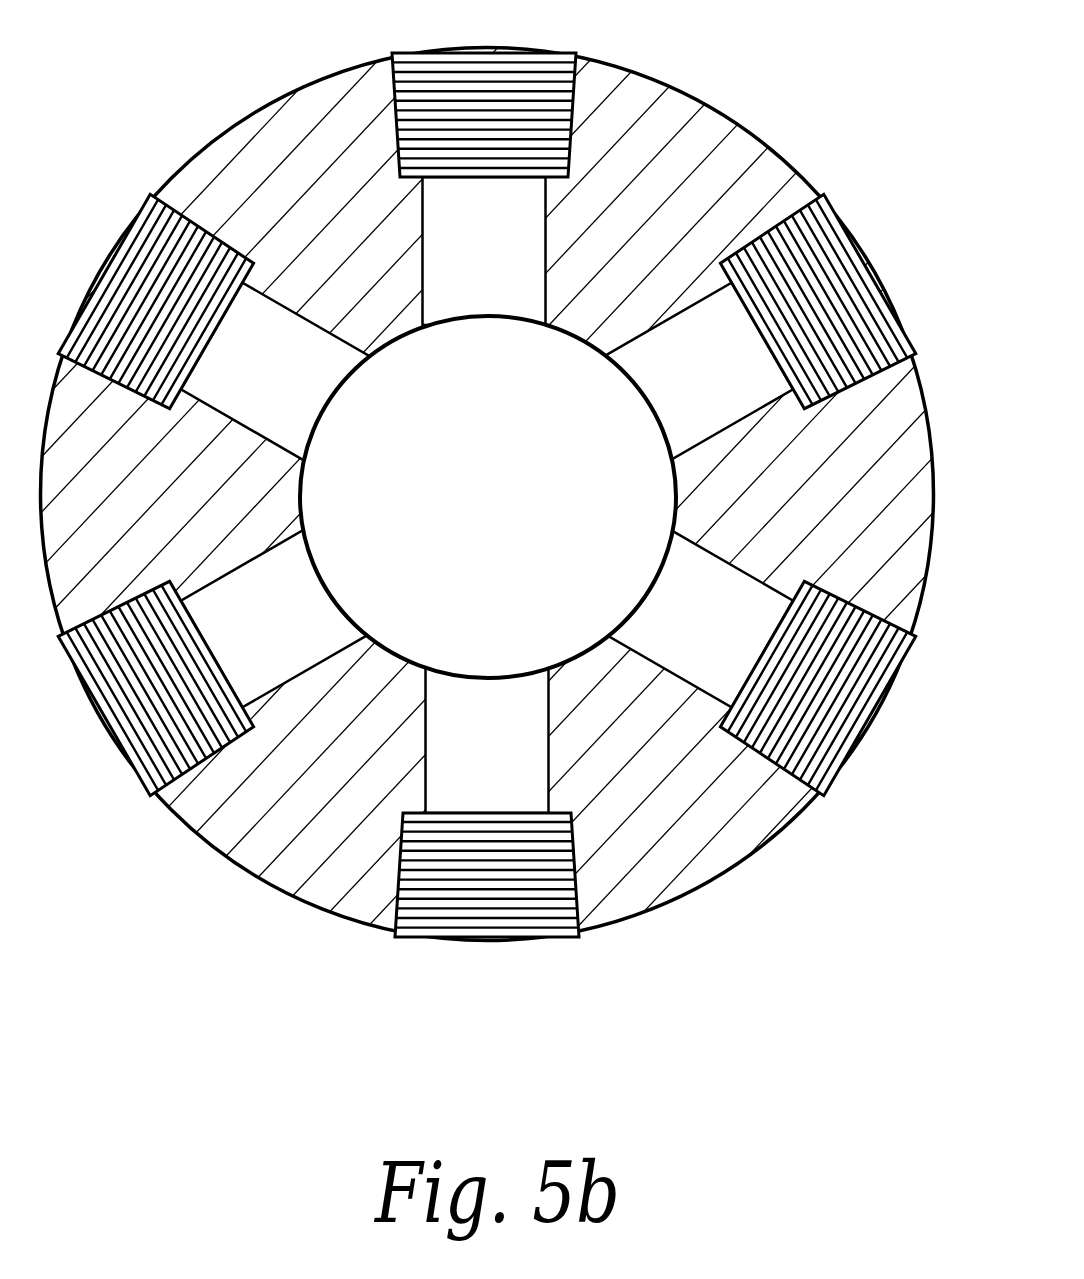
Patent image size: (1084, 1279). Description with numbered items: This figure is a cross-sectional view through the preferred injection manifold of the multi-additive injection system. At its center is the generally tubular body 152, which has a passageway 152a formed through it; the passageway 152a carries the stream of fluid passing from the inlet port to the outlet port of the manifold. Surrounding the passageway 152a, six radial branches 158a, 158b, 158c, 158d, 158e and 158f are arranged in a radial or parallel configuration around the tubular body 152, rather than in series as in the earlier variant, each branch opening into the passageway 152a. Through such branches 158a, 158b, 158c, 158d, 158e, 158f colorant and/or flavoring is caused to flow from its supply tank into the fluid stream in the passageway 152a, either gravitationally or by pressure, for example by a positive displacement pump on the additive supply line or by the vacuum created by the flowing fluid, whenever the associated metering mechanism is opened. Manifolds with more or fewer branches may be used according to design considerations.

The tubular body 152 is at (745, 100).
The passageway 152a is at (528, 519).
The stator pole winding 158a is at (528, 260).
The stator pole winding 158b is at (743, 393).
The stator pole winding 158c is at (752, 638).
The stator pole winding 158d is at (530, 752).
The stator pole winding 158e is at (310, 637).
The stator pole winding 158f is at (305, 390).